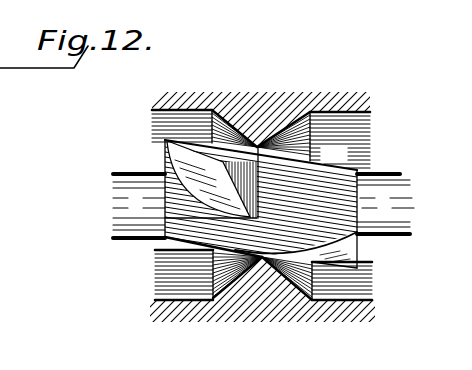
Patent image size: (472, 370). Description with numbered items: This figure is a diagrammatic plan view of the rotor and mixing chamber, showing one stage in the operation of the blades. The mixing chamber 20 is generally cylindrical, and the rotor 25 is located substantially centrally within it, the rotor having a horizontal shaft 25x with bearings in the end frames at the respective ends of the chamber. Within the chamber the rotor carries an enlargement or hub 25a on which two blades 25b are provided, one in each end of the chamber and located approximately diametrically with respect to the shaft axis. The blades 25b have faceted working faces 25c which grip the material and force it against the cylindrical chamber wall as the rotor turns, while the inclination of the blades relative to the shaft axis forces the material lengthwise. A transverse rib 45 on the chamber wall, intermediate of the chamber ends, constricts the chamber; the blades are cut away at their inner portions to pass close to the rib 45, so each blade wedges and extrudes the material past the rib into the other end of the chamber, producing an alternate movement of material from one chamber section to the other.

The mixing chamber 20 is at (188, 316).
The transverse rib 45 is at (262, 297).
The rotor 25 is at (261, 206).
The hub 25a is at (192, 248).
The blades 25b is at (172, 157).
The faceted working faces 25c is at (382, 281).
The horizontal shaft 25x is at (131, 244).